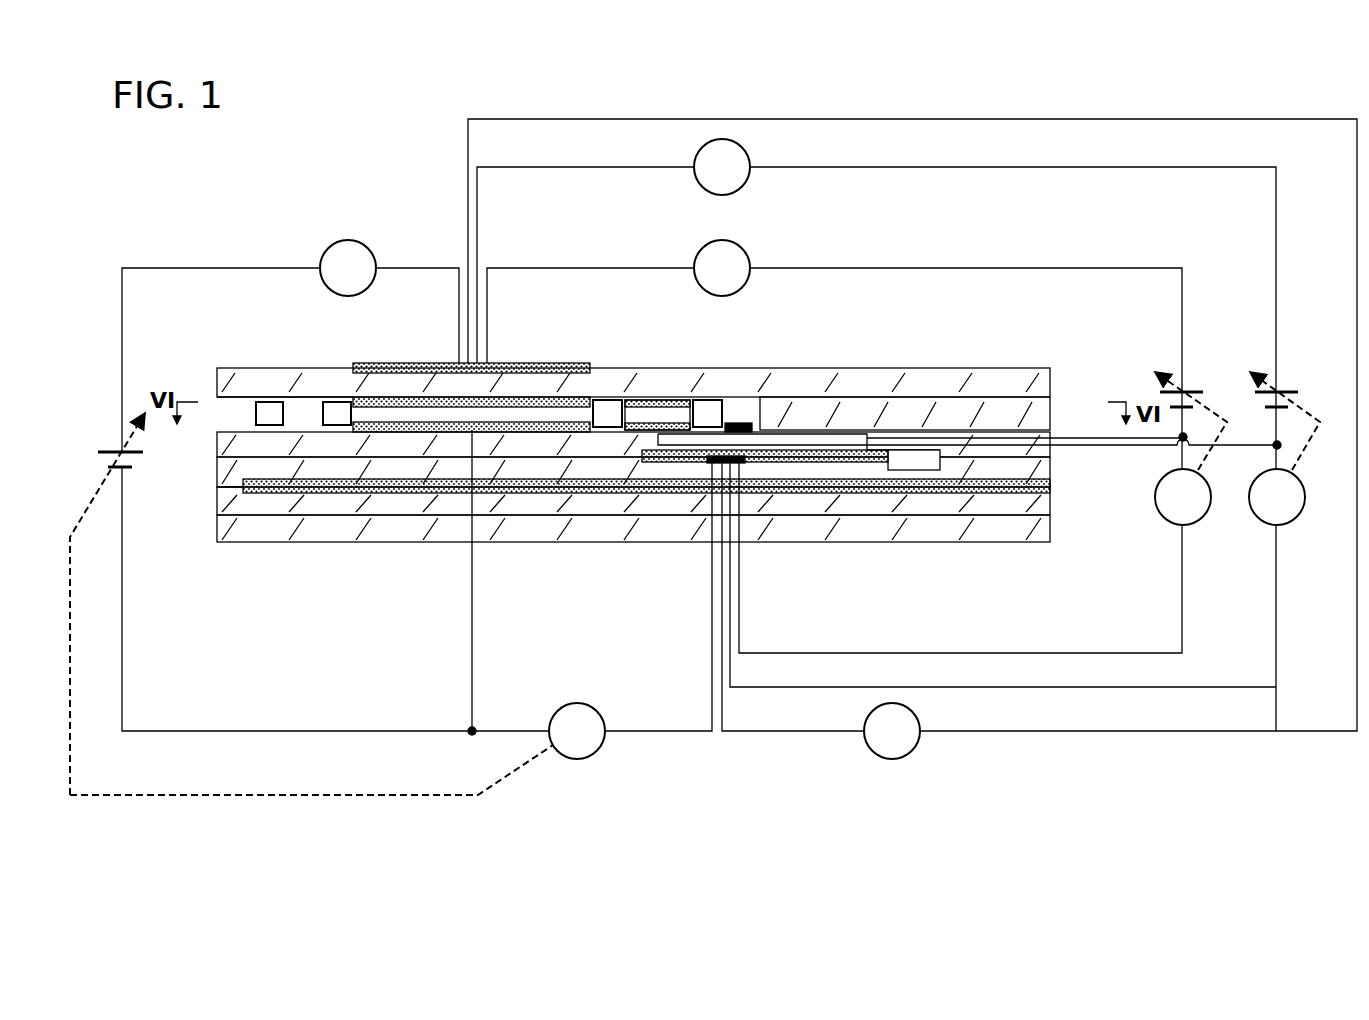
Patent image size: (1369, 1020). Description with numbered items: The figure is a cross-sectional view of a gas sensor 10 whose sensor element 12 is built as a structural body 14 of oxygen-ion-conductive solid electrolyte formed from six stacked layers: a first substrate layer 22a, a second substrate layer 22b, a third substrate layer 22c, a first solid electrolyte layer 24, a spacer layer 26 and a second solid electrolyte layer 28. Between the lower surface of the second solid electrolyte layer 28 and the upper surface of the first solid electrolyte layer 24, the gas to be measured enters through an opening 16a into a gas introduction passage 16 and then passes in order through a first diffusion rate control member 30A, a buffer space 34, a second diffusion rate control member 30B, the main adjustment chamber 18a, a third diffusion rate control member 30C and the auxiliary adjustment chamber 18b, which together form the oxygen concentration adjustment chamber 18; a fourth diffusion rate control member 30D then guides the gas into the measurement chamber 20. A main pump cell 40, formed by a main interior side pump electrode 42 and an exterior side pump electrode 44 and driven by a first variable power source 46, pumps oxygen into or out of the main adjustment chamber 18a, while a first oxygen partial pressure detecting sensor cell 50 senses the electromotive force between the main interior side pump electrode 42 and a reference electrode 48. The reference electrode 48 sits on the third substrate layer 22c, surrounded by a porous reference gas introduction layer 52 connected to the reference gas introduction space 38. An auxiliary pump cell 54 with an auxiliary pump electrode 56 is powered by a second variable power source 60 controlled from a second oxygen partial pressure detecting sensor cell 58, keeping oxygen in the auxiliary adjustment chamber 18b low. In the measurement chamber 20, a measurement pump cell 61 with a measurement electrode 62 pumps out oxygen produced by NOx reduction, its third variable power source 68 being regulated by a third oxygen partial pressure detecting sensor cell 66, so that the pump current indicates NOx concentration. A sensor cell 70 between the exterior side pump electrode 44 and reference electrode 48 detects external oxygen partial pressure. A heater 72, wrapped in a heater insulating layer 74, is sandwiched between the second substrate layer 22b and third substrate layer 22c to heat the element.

The gas sensor 10 is at (224, 164).
The sensor element 12 is at (445, 246).
The structural body 14 is at (916, 370).
The gas introduction passage 16 is at (240, 405).
The opening 16a is at (228, 405).
The oxygen concentration adjustment chamber 18 is at (680, 230).
The main adjustment chamber 18a is at (548, 405).
The auxiliary adjustment chamber 18b is at (648, 405).
The measurement chamber 20 is at (757, 424).
The first substrate layer 22a is at (222, 530).
The second substrate layer 22b is at (222, 500).
The third substrate layer 22c is at (222, 468).
The first solid electrolyte layer 24 is at (222, 436).
The spacer layer 26 is at (1057, 397).
The second solid electrolyte layer 28 is at (1000, 388).
The first diffusion rate control member 30A is at (268, 402).
The second diffusion rate control member 30B is at (338, 402).
The third diffusion rate control member 30C is at (607, 402).
The fourth diffusion rate control member 30D is at (707, 402).
The buffer space 34 is at (305, 410).
The reference gas introduction space 38 is at (1045, 450).
The main pump cell 40 is at (560, 408).
The main interior side pump electrode 42 is at (400, 400).
The exterior side pump electrode 44 is at (518, 395).
The first variable power source 46 is at (103, 452).
The reference electrode 48 is at (712, 428).
The first oxygen partial pressure detecting sensor cell 50 is at (580, 438).
The reference gas introduction layer 52 is at (835, 455).
The auxiliary pump cell 54 is at (650, 408).
The auxiliary pump electrode 56 is at (660, 402).
The second oxygen partial pressure detecting sensor cell 58 is at (630, 445).
The second variable power source 60 is at (1283, 395).
The measurement pump cell 61 is at (776, 400).
The measurement electrode 62 is at (742, 423).
The third oxygen partial pressure detecting sensor cell 66 is at (707, 437).
The third variable power source 68 is at (1190, 395).
The sensor cell 70 is at (745, 466).
The heater 72 is at (334, 486).
The heater insulating layer 74 is at (258, 496).